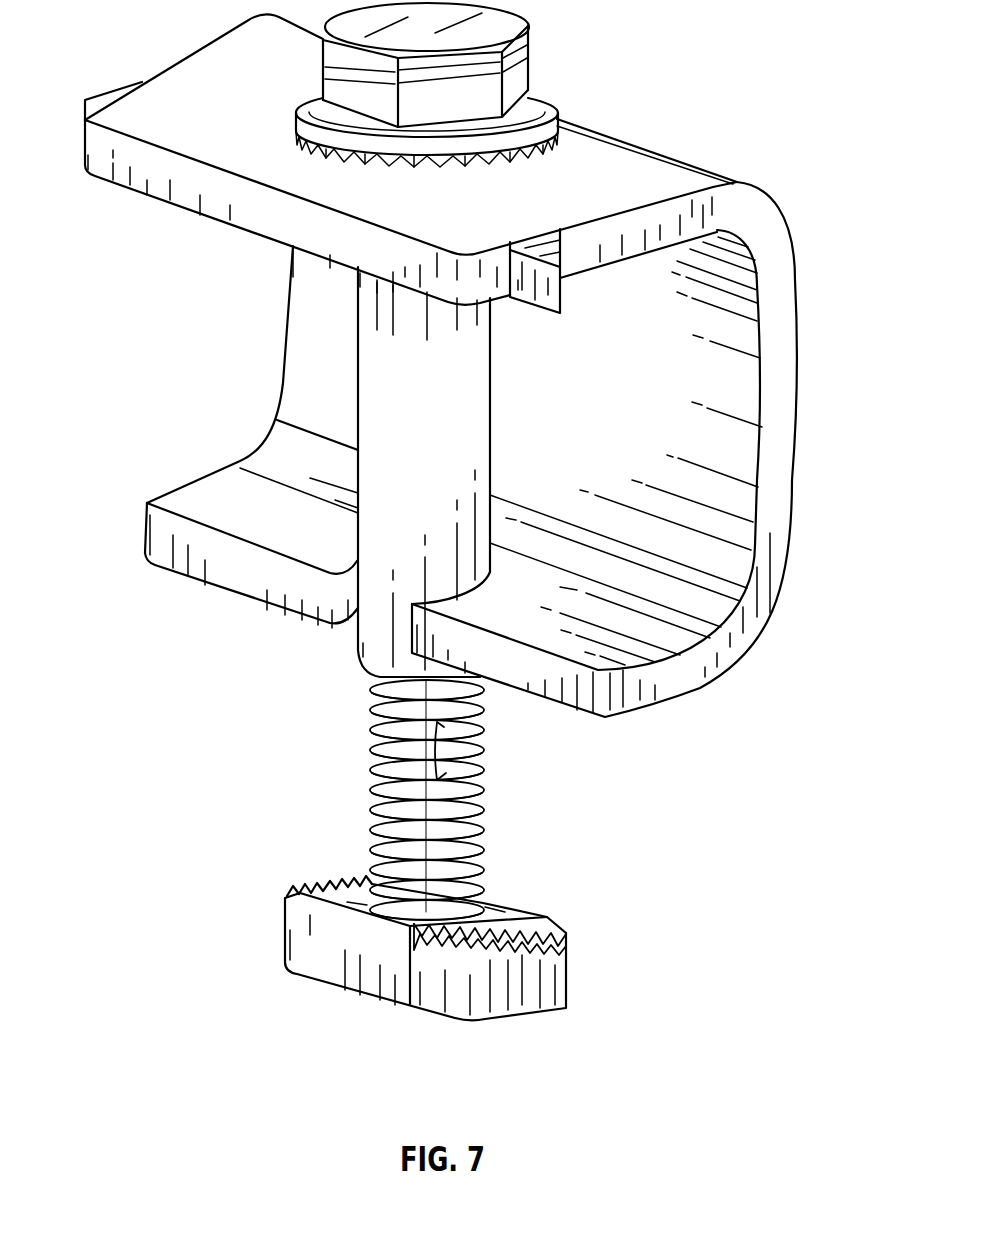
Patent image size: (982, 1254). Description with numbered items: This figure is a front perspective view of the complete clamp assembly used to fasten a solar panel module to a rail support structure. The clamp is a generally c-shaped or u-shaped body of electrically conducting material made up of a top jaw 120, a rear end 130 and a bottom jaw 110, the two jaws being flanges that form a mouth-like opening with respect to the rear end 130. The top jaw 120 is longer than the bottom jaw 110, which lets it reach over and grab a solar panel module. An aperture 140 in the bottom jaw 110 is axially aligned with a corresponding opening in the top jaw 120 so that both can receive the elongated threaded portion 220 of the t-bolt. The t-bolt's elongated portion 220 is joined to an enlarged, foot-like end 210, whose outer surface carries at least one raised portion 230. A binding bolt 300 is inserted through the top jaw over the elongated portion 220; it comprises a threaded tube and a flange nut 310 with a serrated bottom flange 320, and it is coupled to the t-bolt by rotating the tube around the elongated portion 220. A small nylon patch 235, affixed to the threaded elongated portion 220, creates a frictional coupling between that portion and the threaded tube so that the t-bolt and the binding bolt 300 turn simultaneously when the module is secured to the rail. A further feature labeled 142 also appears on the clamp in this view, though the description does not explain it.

The bottom jaw 110 is at (682, 692).
The top jaw 120 is at (140, 193).
The rear end 130 is at (796, 470).
The aperture 140 is at (356, 610).
The tab 142 is at (93, 100).
The enlarged end 210 is at (570, 973).
The elongated portion 220 is at (478, 848).
The raised portion 230 is at (567, 933).
The nylon patch 235 is at (481, 749).
The binding bolt 300 is at (484, 431).
The flange nut 310 is at (533, 70).
The serrated bottom flange 320 is at (513, 157).